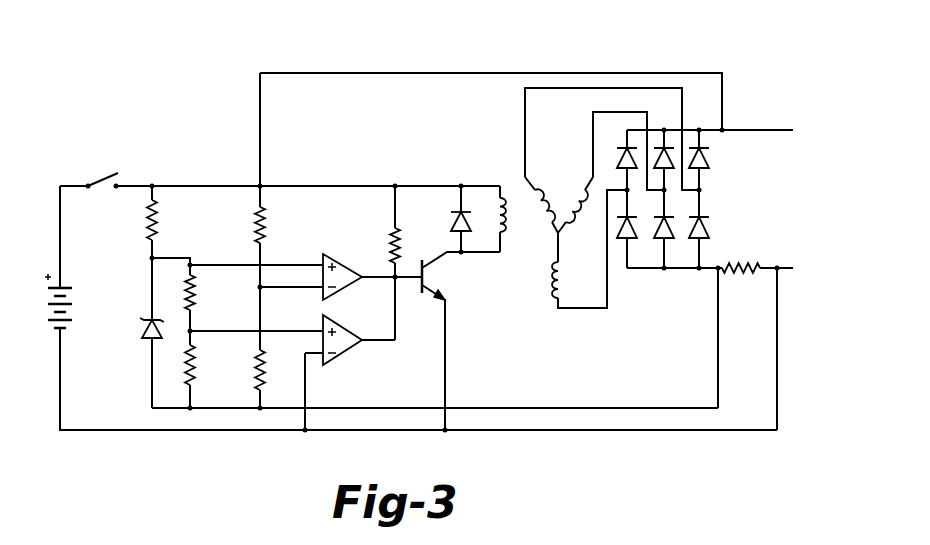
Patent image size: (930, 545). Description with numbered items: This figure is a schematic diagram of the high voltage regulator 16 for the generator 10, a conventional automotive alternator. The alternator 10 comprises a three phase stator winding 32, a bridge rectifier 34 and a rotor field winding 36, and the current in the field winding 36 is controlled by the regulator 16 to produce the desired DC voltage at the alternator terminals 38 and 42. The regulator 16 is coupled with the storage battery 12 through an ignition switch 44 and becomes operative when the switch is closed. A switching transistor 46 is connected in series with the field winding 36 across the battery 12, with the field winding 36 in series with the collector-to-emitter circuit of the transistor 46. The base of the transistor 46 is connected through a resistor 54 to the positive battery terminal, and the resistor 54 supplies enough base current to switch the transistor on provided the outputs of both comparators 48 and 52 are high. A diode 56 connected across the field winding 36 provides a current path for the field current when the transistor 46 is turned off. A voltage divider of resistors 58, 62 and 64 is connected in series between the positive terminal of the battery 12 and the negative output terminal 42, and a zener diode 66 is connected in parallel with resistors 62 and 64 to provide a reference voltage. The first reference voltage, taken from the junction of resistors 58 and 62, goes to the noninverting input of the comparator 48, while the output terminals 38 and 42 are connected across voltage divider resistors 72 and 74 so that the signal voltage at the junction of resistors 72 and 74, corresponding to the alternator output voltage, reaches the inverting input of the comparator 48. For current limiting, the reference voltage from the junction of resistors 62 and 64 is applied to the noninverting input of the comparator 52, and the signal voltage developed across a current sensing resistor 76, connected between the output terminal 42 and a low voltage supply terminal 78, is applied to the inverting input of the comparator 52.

The generator 10 is at (706, 118).
The storage battery 12 is at (44, 308).
The high voltage regulator 16 is at (240, 166).
The three phase stator winding 32 is at (563, 186).
The bridge rectifier 34 is at (708, 192).
The rotor field winding 36 is at (515, 228).
The alternator terminal 38 is at (722, 130).
The negative output terminal 42 is at (718, 271).
The ignition switch 44 is at (102, 174).
The switching transistor 46 is at (422, 286).
The comparator 48 is at (372, 240).
The comparator 52 is at (342, 355).
The resistor 54 is at (391, 244).
The diode 56 is at (488, 184).
The resistor 58 is at (160, 222).
The resistor 62 is at (196, 300).
The resistor 64 is at (186, 358).
The zener diode 66 is at (142, 330).
The resistor 72 is at (264, 222).
The resistor 74 is at (256, 376).
The current sensing resistor 76 is at (760, 232).
The low voltage supply terminal 78 is at (777, 272).